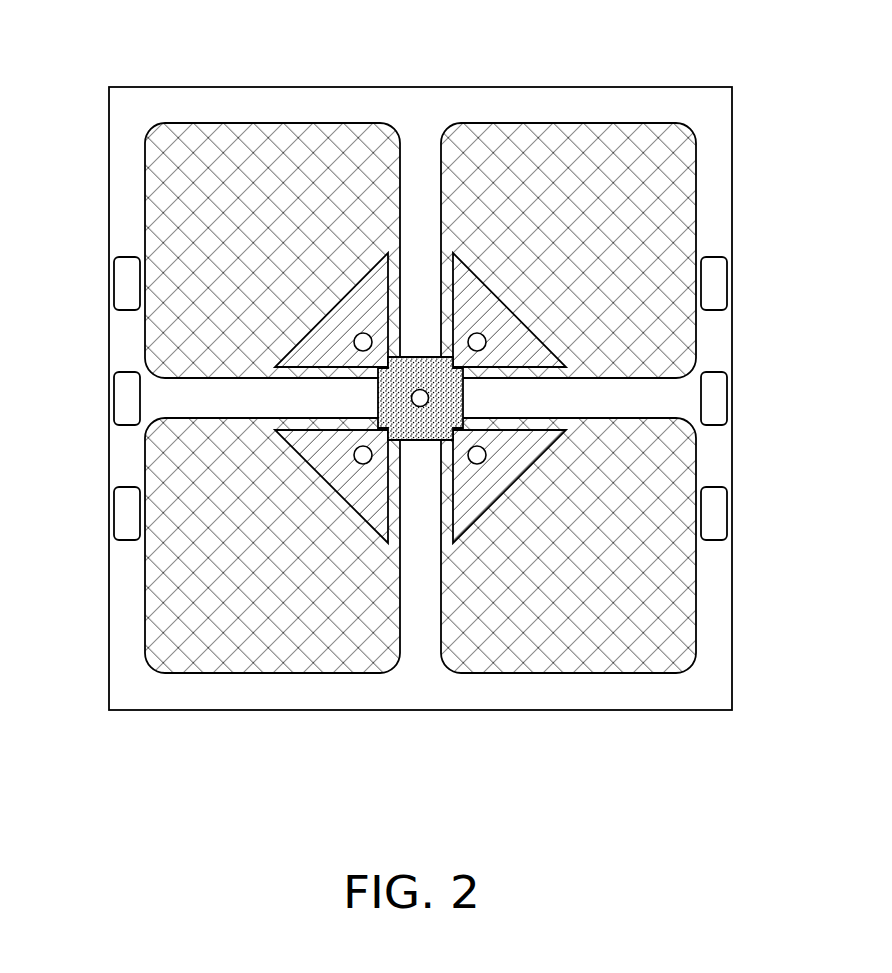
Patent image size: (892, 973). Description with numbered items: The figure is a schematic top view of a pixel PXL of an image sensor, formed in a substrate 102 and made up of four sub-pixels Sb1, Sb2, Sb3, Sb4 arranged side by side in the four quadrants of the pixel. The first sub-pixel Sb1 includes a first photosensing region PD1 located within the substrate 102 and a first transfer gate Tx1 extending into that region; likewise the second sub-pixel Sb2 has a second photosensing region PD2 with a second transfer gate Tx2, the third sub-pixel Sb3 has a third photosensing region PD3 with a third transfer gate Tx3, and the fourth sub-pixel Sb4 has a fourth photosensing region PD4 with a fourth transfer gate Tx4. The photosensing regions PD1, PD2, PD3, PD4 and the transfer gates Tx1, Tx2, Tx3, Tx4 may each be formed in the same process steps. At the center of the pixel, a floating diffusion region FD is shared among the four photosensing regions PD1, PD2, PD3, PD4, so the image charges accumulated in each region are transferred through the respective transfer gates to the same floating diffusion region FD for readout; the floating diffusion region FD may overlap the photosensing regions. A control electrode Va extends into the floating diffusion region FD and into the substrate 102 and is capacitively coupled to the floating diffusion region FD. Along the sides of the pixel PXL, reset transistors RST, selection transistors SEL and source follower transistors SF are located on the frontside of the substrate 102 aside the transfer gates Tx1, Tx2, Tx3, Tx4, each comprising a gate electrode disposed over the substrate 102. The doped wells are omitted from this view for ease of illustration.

The pixel PXL is at (802, 815).
The substrate 102 is at (732, 625).
The first sub-pixel Sb1 is at (208, 106).
The second sub-pixel Sb2 is at (645, 106).
The third sub-pixel Sb3 is at (208, 690).
The fourth sub-pixel Sb4 is at (645, 690).
The first photosensing region PD1 is at (323, 130).
The second photosensing region PD2 is at (515, 143).
The third photosensing region PD3 is at (323, 670).
The fourth photosensing region PD4 is at (515, 655).
The first transfer gate Tx1 is at (367, 308).
The second transfer gate Tx2 is at (473, 308).
The third transfer gate Tx3 is at (367, 490).
The fourth transfer gate Tx4 is at (473, 490).
The floating diffusion region FD is at (421, 366).
The control electrode Va is at (420, 398).
The selection transistor SEL is at (127, 283).
The source follower transistor SF is at (127, 398).
The reset transistor RST is at (127, 513).